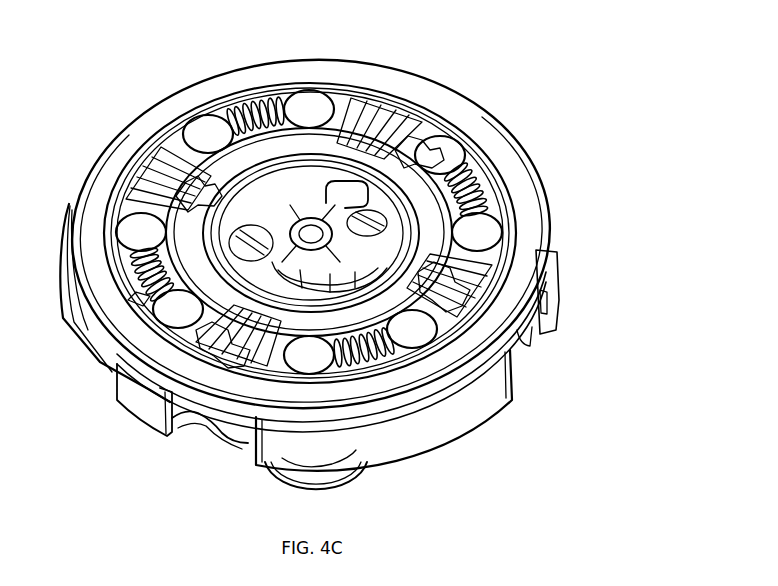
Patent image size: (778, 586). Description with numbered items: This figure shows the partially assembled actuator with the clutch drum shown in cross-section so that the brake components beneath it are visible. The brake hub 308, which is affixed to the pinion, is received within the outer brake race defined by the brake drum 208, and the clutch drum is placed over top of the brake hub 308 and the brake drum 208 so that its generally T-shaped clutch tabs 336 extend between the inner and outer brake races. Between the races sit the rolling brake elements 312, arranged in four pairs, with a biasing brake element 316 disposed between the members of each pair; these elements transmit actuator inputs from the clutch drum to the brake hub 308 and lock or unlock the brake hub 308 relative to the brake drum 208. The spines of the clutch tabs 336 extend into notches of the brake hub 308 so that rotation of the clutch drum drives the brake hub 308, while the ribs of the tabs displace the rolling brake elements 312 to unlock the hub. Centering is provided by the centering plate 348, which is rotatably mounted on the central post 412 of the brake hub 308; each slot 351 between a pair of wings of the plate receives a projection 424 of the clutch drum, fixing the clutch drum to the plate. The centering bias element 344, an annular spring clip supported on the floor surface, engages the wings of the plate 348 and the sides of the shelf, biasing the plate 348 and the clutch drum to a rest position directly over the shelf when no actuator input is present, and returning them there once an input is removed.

The brake drum 208 is at (535, 257).
The brake hub 308 is at (470, 138).
The rolling brake elements 312 is at (420, 336).
The biasing brake elements 316 is at (145, 300).
The clutch tabs 336 is at (386, 181).
The centering bias element 344 is at (273, 113).
The centering plate 348 is at (230, 188).
The slot 351 is at (278, 232).
The central post 412 is at (308, 226).
The projection 424 is at (368, 214).